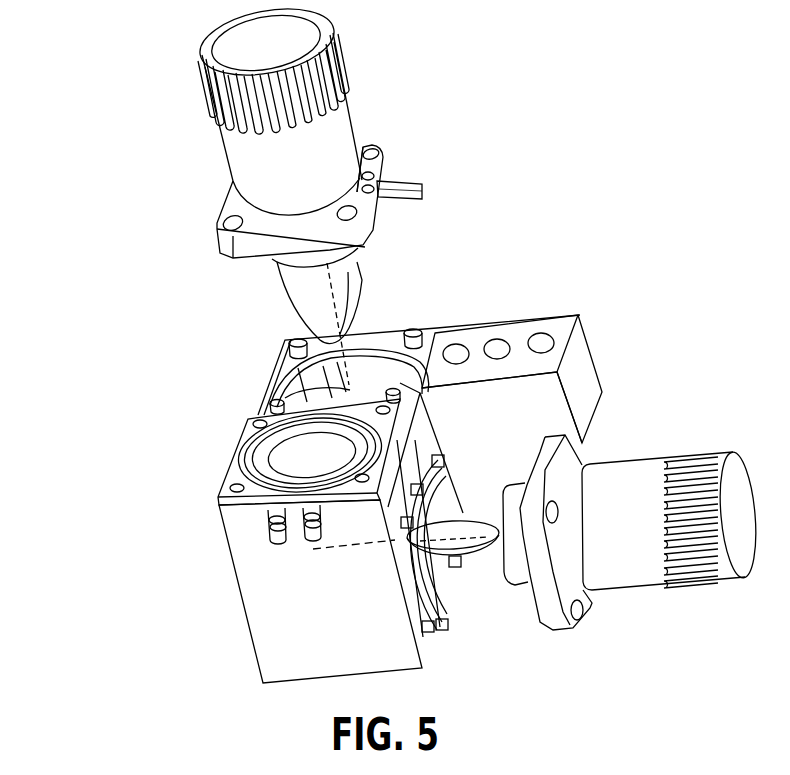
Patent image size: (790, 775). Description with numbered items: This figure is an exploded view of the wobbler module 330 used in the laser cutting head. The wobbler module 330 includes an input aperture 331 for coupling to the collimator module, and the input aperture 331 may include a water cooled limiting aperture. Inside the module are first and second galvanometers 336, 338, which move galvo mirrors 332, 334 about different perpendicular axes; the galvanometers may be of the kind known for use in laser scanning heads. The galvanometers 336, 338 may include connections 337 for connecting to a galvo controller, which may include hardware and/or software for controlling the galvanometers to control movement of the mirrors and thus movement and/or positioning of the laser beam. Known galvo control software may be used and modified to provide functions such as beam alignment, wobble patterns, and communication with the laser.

The wobbler module 330 is at (78, 148).
The input aperture 331 is at (256, 458).
The galvo mirror 332 is at (470, 520).
The galvo mirror 334 is at (362, 293).
The first galvanometer 336 is at (685, 436).
The connections 337 is at (423, 194).
The second galvanometer 338 is at (362, 90).